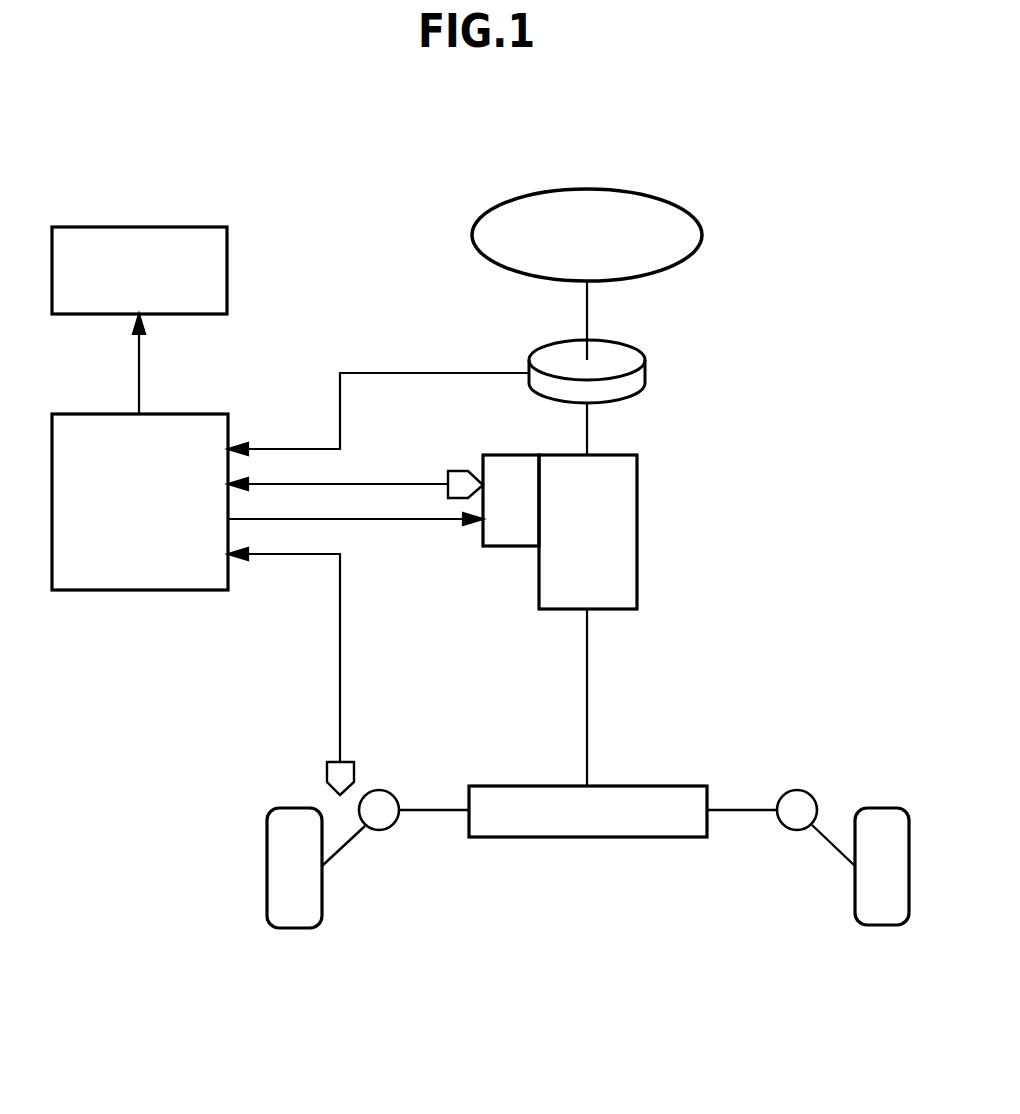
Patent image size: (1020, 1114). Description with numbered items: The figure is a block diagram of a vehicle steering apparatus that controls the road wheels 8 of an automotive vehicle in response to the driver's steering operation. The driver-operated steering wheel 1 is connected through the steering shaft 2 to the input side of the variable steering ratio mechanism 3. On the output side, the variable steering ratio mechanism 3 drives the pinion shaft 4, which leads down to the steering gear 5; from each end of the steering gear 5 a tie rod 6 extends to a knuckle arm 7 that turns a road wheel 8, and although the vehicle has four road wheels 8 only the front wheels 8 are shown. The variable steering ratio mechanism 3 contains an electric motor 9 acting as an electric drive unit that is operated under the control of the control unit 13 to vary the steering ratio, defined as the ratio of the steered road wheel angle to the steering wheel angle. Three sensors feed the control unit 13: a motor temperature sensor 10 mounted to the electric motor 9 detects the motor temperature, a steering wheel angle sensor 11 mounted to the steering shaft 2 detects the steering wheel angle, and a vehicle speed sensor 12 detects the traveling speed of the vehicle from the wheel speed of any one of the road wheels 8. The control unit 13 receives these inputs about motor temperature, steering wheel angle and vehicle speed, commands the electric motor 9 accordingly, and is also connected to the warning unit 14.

The steering wheel 1 is at (705, 237).
The steering shaft 2 is at (587, 311).
The variable steering ratio mechanism 3 is at (626, 523).
The pinion shaft 4 is at (588, 681).
The steering gear 5 is at (660, 798).
The tie rod 6 is at (447, 810).
The knuckle arm 7 is at (350, 842).
The road wheel 8 is at (290, 808).
The electric motor 9 is at (510, 535).
The motor temperature sensor 10 is at (456, 468).
The steering wheel angle sensor 11 is at (645, 373).
The vehicle speed sensor 12 is at (355, 770).
The control unit 13 is at (202, 413).
The warning unit 14 is at (227, 268).